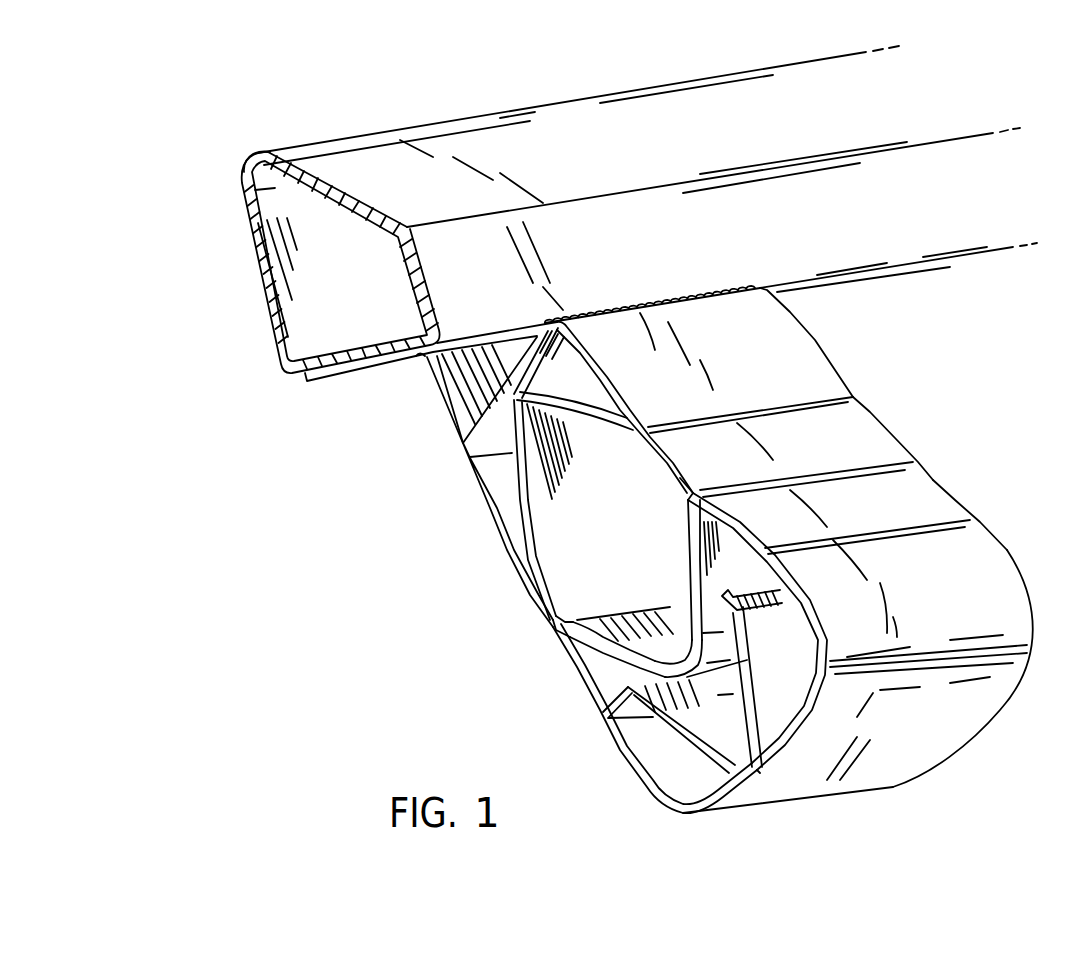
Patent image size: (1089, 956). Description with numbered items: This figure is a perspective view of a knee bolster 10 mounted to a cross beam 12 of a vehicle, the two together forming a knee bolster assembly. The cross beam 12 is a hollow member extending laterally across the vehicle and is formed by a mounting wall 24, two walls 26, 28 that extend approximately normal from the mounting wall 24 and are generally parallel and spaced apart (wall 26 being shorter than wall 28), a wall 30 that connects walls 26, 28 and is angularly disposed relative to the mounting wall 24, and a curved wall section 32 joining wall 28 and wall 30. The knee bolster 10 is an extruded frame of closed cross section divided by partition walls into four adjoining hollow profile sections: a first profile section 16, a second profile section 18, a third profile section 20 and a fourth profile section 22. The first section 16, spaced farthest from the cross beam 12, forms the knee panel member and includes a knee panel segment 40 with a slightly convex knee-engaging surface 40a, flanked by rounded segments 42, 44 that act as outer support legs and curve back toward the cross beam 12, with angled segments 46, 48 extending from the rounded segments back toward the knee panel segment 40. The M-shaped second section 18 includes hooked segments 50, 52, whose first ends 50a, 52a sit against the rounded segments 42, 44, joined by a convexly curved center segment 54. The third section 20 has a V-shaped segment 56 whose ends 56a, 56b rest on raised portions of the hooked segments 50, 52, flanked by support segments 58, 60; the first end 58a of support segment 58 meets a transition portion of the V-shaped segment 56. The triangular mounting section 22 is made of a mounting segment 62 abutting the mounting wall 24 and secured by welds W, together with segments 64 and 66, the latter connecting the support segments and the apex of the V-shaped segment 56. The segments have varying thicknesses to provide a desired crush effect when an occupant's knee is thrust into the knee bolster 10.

The knee bolster 10 is at (437, 612).
The cross beam 12 is at (260, 302).
The first profile section 16 is at (1007, 550).
The second profile section 18 is at (940, 483).
The third profile section 20 is at (852, 388).
The fourth profile section 22 is at (447, 423).
The mounting wall 24 is at (342, 357).
The wall 26 is at (427, 276).
The wall 28 is at (257, 258).
The wall 30 is at (357, 203).
The curved wall section 32 is at (250, 166).
The knee panel segment 40 is at (760, 773).
The surface 40a is at (882, 762).
The rounded segment 42 is at (620, 770).
The rounded segment 44 is at (820, 608).
The angled segment 46 is at (683, 737).
The angled segment 48 is at (757, 680).
The hooked segment 50 is at (612, 637).
The first end of hooked segment 50a is at (592, 708).
The hooked segment 52 is at (682, 552).
The first end of hooked segment 52a is at (753, 547).
The center segment 54 is at (677, 657).
The V-shaped segment 56 is at (582, 423).
The end of V-shaped segment 56a is at (550, 627).
The end of V-shaped segment 56b is at (697, 490).
The support segment 58 is at (482, 512).
The first end of support segment 58a is at (512, 557).
The support segment 60 is at (617, 370).
The mounting segment 62 is at (485, 345).
The segment 64 is at (437, 400).
The segment 66 is at (543, 370).
The welds W is at (617, 307).